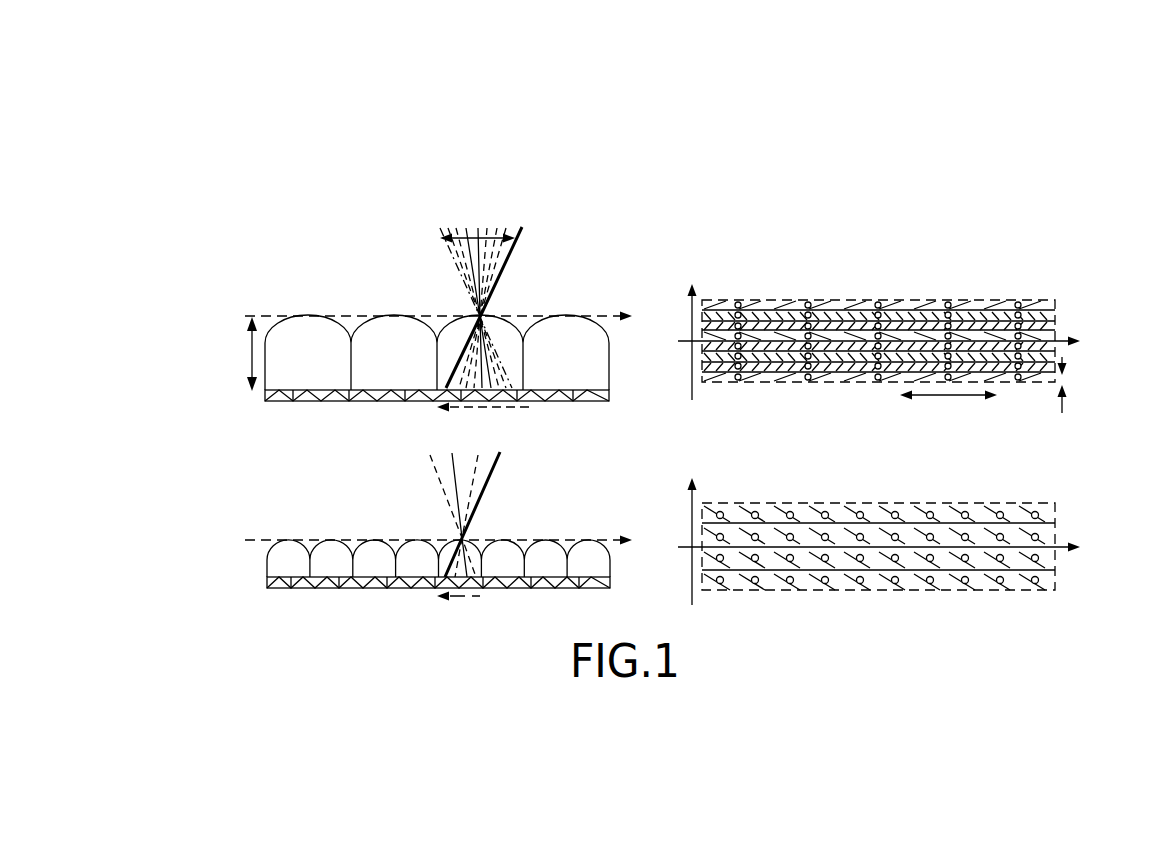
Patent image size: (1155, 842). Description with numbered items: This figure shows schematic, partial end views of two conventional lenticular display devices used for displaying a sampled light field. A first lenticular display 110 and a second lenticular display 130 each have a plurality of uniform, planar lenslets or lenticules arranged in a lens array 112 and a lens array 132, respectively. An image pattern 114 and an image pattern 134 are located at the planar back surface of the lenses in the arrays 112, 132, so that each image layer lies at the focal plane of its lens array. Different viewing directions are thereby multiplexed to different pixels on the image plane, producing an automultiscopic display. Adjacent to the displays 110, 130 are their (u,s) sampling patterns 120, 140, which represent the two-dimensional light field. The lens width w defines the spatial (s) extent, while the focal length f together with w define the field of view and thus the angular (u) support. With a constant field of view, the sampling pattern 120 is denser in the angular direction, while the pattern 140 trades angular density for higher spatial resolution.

The first lenticular display 110 is at (166, 283).
The lens array 112 is at (617, 348).
The image pattern 114 is at (617, 395).
The sampling pattern 120 is at (1068, 290).
The second lenticular display 130 is at (207, 556).
The lens array 132 is at (616, 562).
The image pattern 134 is at (616, 583).
The sampling pattern 140 is at (1065, 512).